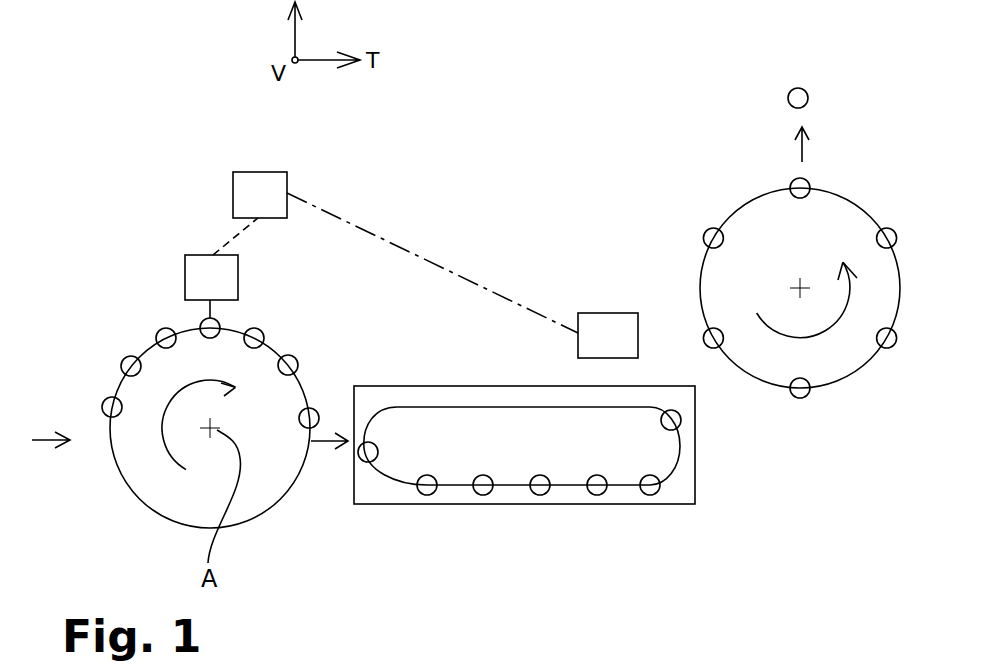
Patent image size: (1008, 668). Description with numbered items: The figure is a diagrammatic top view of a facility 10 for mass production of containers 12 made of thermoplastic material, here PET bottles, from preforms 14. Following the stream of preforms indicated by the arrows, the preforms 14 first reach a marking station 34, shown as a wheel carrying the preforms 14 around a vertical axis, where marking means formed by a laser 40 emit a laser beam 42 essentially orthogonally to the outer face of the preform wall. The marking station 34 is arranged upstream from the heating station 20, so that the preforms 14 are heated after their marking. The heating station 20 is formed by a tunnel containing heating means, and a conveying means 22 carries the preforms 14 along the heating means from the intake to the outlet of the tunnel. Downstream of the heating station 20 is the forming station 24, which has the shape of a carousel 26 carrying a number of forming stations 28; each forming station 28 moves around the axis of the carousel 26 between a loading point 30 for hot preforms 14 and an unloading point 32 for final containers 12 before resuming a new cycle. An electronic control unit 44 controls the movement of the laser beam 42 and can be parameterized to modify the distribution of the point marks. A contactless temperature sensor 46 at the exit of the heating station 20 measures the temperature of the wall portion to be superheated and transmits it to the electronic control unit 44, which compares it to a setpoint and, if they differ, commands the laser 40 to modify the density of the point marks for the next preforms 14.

The facility 10 is at (150, 193).
The container 12 is at (808, 98).
The preform 14 is at (108, 405).
The heating station 20 is at (577, 508).
The conveying means 22 is at (527, 407).
The forming station 24 is at (733, 195).
The carousel 26 is at (837, 338).
The forming station (on carousel) 28 is at (799, 393).
The loading point 30 is at (710, 379).
The unloading point 32 is at (803, 148).
The marking station 34 is at (95, 367).
The laser 40 is at (197, 272).
The laser beam 42 is at (208, 308).
The electronic control unit 44 is at (258, 187).
The contactless temperature sensor 46 is at (613, 323).